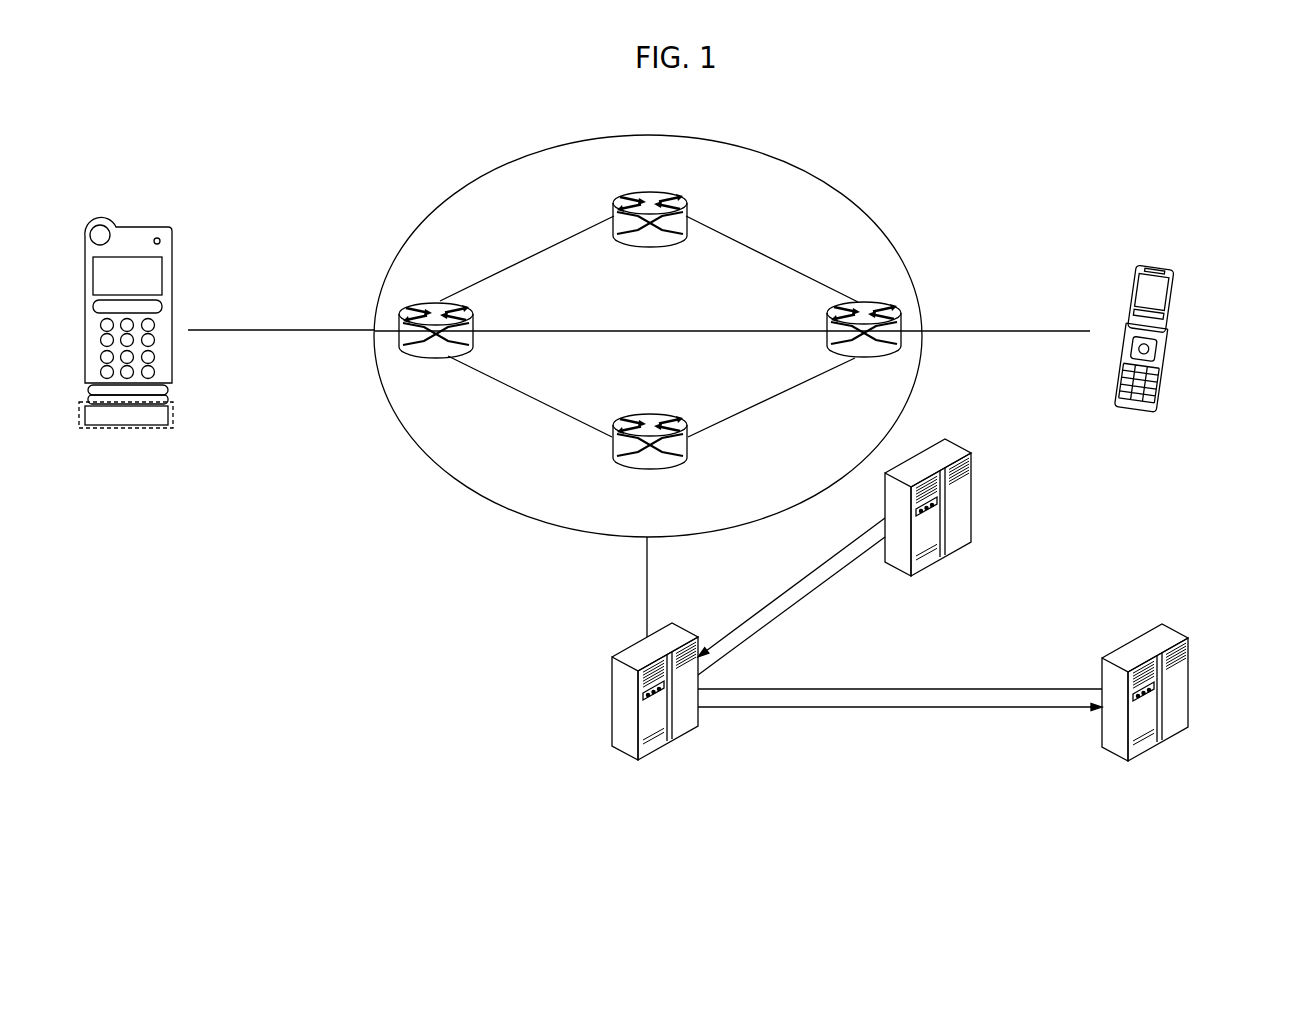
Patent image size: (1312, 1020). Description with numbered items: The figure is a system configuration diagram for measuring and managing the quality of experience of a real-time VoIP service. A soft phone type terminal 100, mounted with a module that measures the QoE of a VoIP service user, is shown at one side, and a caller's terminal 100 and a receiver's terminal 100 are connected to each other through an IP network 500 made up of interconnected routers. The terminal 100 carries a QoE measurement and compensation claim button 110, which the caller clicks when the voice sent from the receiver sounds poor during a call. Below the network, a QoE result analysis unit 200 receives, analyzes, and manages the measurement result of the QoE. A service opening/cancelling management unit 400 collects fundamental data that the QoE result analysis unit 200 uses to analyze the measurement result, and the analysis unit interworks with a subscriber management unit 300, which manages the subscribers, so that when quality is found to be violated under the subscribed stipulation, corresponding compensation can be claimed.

The terminal 100 is at (85, 334).
The QoE measurement and compensation claim button 110 is at (173, 413).
The QoE result analysis unit 200 is at (612, 701).
The subscriber management unit 300 is at (1178, 630).
The service opening/cancelling management unit 400 is at (972, 493).
The IP network 500 is at (850, 198).